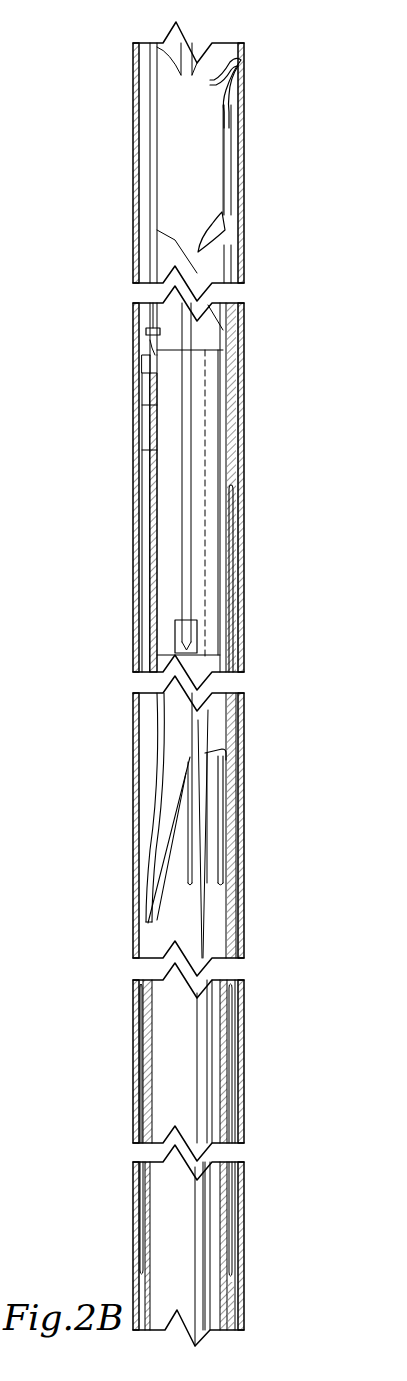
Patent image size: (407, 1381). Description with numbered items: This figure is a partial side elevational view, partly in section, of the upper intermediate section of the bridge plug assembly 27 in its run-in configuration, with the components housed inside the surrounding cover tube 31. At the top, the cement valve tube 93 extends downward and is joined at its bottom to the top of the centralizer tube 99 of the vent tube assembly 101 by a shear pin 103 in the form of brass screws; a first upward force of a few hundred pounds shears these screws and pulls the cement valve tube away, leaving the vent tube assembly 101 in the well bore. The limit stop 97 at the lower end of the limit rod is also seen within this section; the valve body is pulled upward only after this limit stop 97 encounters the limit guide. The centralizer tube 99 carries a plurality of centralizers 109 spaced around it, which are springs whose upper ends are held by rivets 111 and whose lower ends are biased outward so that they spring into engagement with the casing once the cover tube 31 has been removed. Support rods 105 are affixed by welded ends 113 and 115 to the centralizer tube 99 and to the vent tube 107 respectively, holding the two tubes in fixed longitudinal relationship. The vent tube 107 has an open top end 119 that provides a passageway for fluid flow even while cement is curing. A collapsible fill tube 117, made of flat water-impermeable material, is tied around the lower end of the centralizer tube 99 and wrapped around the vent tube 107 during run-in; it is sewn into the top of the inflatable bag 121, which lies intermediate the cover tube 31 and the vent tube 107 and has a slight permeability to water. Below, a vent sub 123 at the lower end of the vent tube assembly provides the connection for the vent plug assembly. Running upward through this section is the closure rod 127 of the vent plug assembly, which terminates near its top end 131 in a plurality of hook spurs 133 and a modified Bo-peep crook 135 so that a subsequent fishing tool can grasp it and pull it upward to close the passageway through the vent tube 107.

The bridge plug assembly 27 is at (262, 82).
The cover tube 31 is at (239, 395).
The cement valve tube 93 is at (155, 254).
The limit stop 97 is at (176, 638).
The centralizer tube 99 is at (152, 318).
The vent tube assembly 101 is at (318, 343).
The shear pin 103 is at (146, 332).
The support rods 105 is at (198, 720).
The vent tube 107 is at (180, 908).
The centralizers 109 is at (150, 488).
The rivets 111 is at (154, 372).
The welded end 113 is at (230, 487).
The welded end 115 is at (220, 810).
The collapsible fill tube 117 is at (168, 700).
The top end of vent tube 119 is at (225, 751).
The inflatable bag 121 is at (140, 1000).
The vent sub 123 is at (232, 1295).
The closure rod 127 is at (232, 191).
The top end of closure rod 131 is at (235, 128).
The hook spurs 133 is at (210, 220).
The modified Bo-peep crook 135 is at (210, 82).